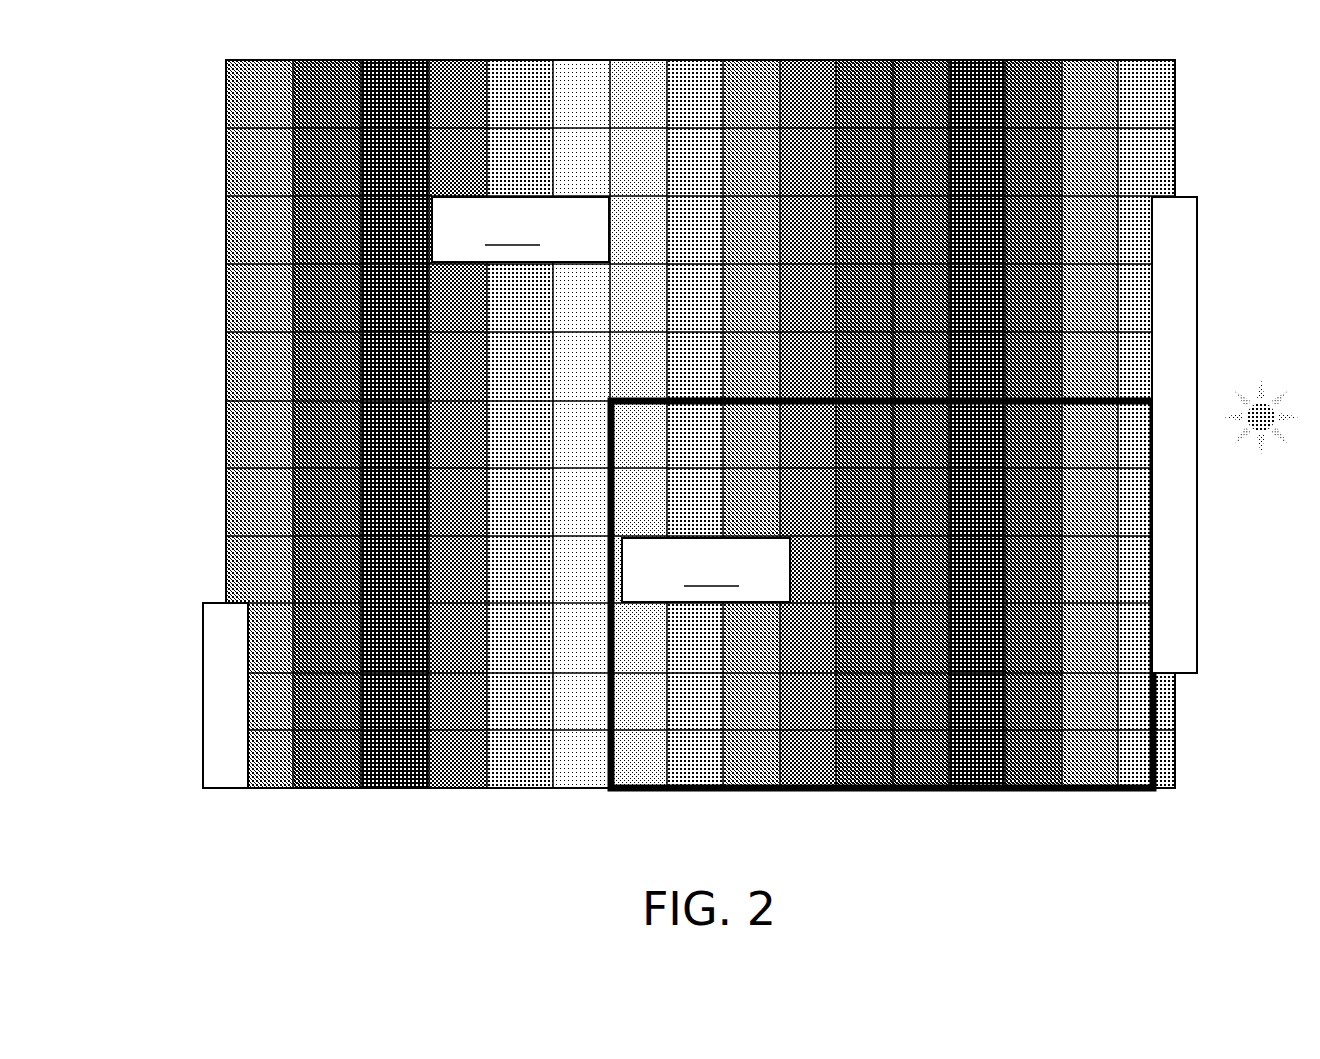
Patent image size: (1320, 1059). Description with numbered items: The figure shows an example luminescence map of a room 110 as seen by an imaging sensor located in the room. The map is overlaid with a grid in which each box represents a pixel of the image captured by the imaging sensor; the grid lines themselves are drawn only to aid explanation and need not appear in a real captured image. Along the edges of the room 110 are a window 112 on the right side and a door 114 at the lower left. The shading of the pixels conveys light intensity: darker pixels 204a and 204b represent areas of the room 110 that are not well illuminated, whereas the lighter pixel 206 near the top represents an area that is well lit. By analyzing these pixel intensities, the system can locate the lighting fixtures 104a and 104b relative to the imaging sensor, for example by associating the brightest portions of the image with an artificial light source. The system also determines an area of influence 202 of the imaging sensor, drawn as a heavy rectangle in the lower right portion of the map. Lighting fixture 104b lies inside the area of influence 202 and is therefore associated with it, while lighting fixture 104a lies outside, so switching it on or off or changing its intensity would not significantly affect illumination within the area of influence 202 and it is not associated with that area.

The room 110 is at (1175, 93).
The window 112 is at (1200, 370).
The door 114 is at (220, 618).
The lighting fixture 104a is at (520, 229).
The lighting fixture 104b is at (706, 570).
The area of influence 202 is at (964, 595).
The pixel 204a is at (360, 230).
The pixel 204b is at (360, 355).
The pixel 206 is at (584, 80).